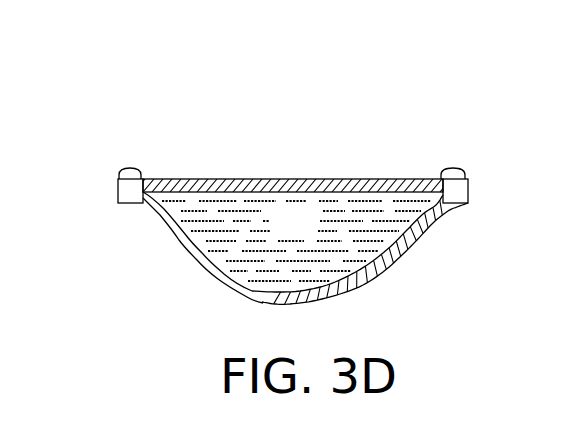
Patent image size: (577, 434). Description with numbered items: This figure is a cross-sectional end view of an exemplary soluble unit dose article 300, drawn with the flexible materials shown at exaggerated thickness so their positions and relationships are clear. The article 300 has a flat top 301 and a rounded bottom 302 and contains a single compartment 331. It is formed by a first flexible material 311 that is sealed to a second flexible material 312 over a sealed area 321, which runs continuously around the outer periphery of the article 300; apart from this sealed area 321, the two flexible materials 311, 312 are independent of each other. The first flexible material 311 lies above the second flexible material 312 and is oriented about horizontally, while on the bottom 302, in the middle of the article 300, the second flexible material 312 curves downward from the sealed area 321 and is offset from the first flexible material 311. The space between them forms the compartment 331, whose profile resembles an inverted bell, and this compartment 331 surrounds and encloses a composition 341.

The soluble unit dose article 300 is at (177, 130).
The flat top 301 is at (262, 162).
The first flexible material 311 is at (312, 187).
The sealed area 321 is at (129, 167).
The rounded bottom 302 is at (213, 298).
The second flexible material 312 is at (180, 237).
The compartment 331 is at (328, 237).
The composition 341 is at (313, 232).